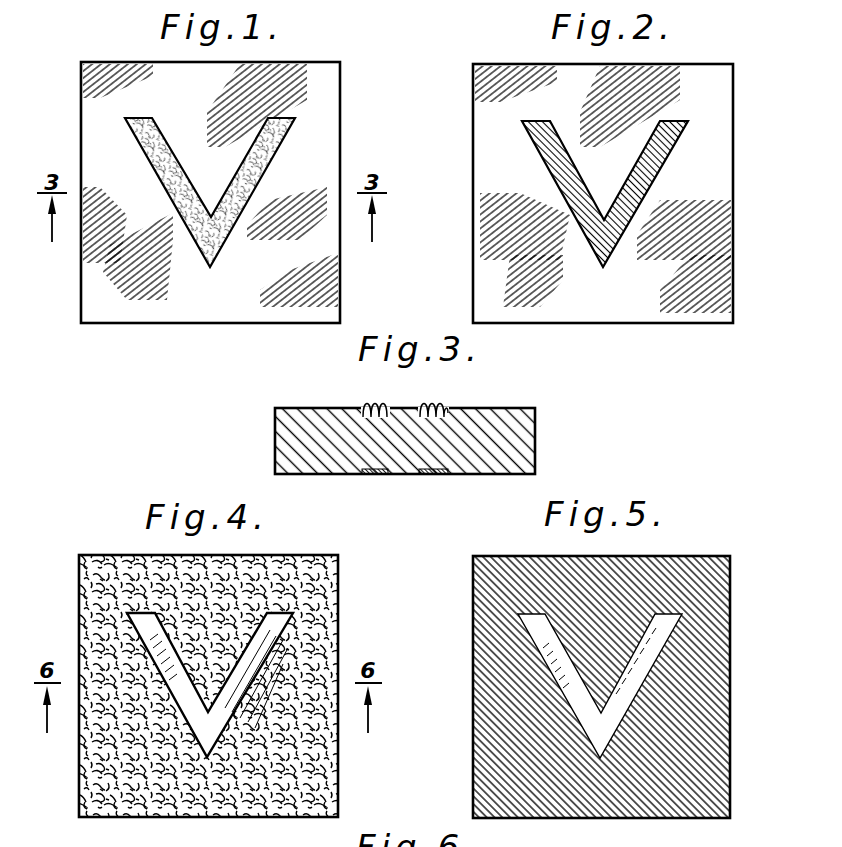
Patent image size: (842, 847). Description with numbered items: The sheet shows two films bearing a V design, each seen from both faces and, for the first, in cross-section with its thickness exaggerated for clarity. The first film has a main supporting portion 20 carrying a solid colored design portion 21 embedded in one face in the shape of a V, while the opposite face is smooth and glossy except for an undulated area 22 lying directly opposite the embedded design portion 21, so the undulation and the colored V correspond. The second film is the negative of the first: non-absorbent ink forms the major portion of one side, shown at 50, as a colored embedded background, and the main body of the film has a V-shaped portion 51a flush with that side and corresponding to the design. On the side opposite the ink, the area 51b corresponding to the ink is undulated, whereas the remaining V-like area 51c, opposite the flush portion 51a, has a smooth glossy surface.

In FIG. 1, the main supporting portion 20 is at (322, 290).
In FIG. 2, the main supporting portion 20 is at (642, 310).
In FIG. 3, the main supporting portion 20 is at (525, 433).
In FIG. 2, the colored design portion 21 is at (667, 137).
In FIG. 3, the colored design portion 21 is at (377, 475).
In FIG. 1, the undulated area 22 is at (290, 128).
In FIG. 3, the undulated area 22 is at (435, 393).
In FIG. 5, the non-absorbent ink portion 50 is at (715, 777).
In FIG. 5, the flush portion of the main body 51a is at (653, 643).
In FIG. 4, the undulated surface area 51b is at (317, 627).
In FIG. 4, the smooth glossy V-like area 51c is at (135, 622).